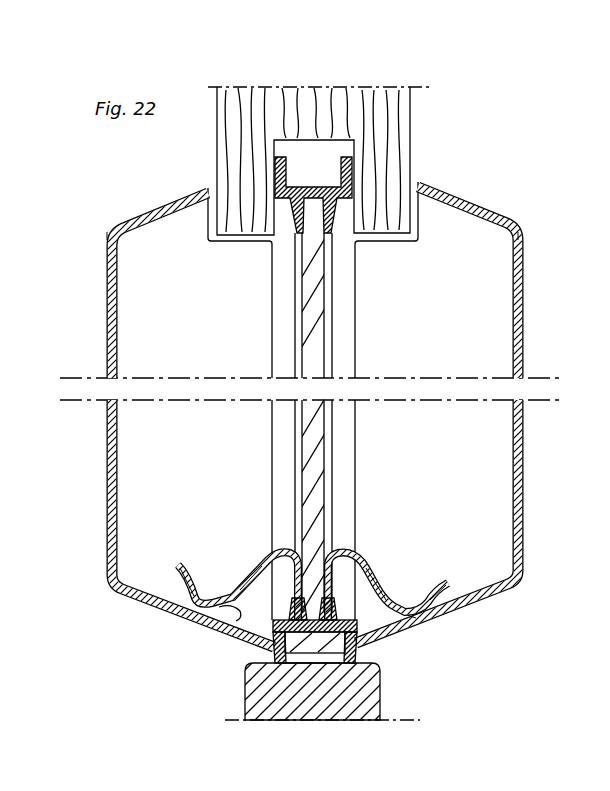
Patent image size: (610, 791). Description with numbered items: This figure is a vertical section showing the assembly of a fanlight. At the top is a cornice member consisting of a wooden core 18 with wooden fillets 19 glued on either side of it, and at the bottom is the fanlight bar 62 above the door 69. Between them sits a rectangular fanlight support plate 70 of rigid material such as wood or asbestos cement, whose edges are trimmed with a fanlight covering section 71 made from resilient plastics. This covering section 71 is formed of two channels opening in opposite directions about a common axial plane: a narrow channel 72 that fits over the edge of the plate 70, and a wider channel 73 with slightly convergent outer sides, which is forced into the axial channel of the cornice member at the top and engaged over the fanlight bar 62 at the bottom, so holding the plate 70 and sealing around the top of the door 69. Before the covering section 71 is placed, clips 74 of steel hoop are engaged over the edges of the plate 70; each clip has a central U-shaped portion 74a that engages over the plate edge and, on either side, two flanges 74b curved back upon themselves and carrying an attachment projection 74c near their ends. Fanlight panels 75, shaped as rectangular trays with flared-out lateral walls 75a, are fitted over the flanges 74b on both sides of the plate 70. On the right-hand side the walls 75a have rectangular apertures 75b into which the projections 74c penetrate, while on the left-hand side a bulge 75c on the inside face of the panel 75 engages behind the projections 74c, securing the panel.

The wooden core 18 is at (343, 118).
The fillets 19 is at (395, 167).
The fanlight bar 62 is at (305, 652).
The door 69 is at (372, 720).
The fanlight support plate 70 is at (308, 303).
The fanlight covering section 71 is at (272, 241).
The narrow channel 72 is at (331, 236).
The wider channel 73 is at (353, 188).
The clips 74 is at (348, 553).
The central U-shaped portion 74a is at (275, 648).
The flanges 74b is at (247, 578).
The attachment projection 74c is at (186, 612).
The fanlight panels 75 is at (519, 447).
The flared-out lateral walls 75a is at (121, 223).
The rectangular apertures 75b is at (413, 622).
The bulge 75c is at (232, 622).